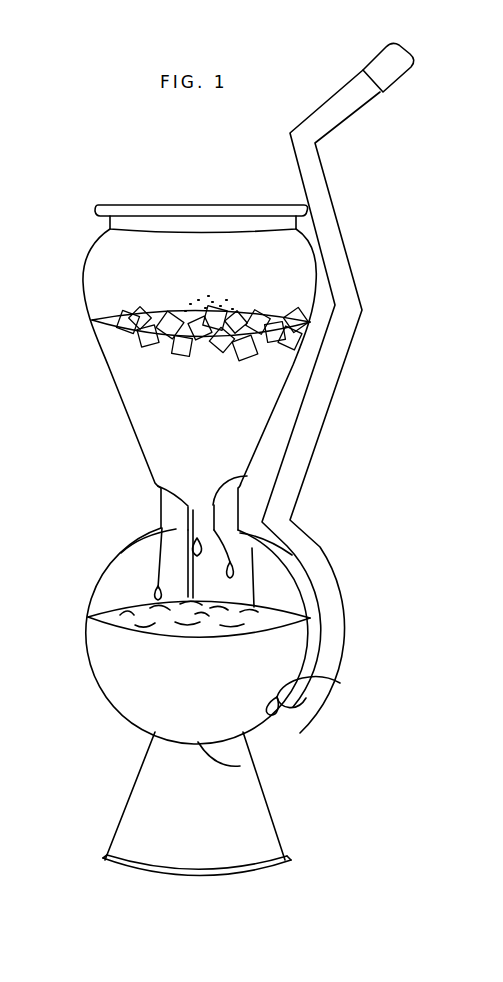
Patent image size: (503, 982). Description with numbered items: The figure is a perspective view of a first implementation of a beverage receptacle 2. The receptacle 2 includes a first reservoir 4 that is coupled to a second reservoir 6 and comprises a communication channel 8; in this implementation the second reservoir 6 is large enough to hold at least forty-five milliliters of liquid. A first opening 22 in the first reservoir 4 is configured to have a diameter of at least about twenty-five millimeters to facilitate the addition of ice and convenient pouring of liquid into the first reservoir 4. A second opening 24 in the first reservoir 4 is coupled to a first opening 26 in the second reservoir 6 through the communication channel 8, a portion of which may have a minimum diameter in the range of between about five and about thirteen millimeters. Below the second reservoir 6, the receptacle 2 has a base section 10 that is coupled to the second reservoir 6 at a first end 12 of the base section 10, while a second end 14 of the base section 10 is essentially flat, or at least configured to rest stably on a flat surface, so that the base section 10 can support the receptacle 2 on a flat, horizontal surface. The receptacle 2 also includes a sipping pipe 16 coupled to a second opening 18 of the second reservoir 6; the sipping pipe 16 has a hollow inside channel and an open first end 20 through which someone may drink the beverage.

The beverage receptacle 2 is at (236, 156).
The first reservoir 4 is at (146, 402).
The second reservoir 6 is at (128, 671).
The communication channel 8 is at (160, 519).
The base section 10 is at (158, 820).
The first end 12 is at (240, 766).
The second end 14 is at (248, 882).
The sipping pipe 16 is at (338, 264).
The second opening 18 is at (340, 683).
The open first end 20 is at (413, 52).
The first opening 22 is at (170, 206).
The second opening 24 is at (247, 476).
The first opening 26 is at (226, 557).